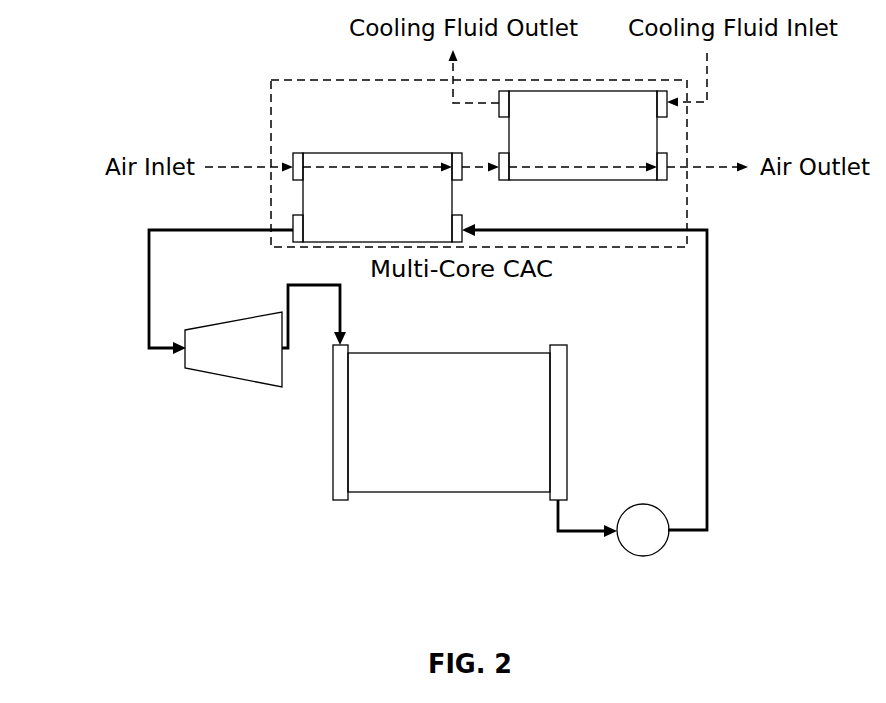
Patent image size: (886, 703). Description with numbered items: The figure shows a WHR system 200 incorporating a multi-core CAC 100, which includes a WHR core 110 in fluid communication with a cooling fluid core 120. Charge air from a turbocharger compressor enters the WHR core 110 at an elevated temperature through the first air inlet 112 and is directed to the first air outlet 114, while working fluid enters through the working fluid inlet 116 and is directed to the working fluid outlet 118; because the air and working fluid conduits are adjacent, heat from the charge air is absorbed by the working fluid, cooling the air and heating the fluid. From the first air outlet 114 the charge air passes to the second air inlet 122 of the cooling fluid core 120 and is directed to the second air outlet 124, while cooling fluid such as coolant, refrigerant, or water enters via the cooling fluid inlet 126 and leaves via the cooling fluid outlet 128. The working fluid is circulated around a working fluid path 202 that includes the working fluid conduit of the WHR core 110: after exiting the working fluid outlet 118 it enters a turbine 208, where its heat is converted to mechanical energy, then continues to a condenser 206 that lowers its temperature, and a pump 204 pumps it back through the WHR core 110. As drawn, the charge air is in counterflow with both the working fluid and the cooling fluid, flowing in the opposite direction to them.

The multi-core CAC 100 is at (700, 194).
The WHR core 110 is at (398, 211).
The first air inlet 112 is at (300, 156).
The first air outlet 114 is at (456, 157).
The working fluid inlet 116 is at (456, 220).
The working fluid outlet 118 is at (295, 222).
The cooling fluid core 120 is at (605, 147).
The second air inlet 122 is at (504, 157).
The second air outlet 124 is at (663, 174).
The cooling fluid inlet 126 is at (665, 96).
The cooling fluid outlet 128 is at (505, 96).
The WHR system 200 is at (137, 583).
The working fluid path 202 is at (709, 356).
The pump 204 is at (665, 541).
The condenser 206 is at (448, 494).
The turbine 208 is at (225, 380).